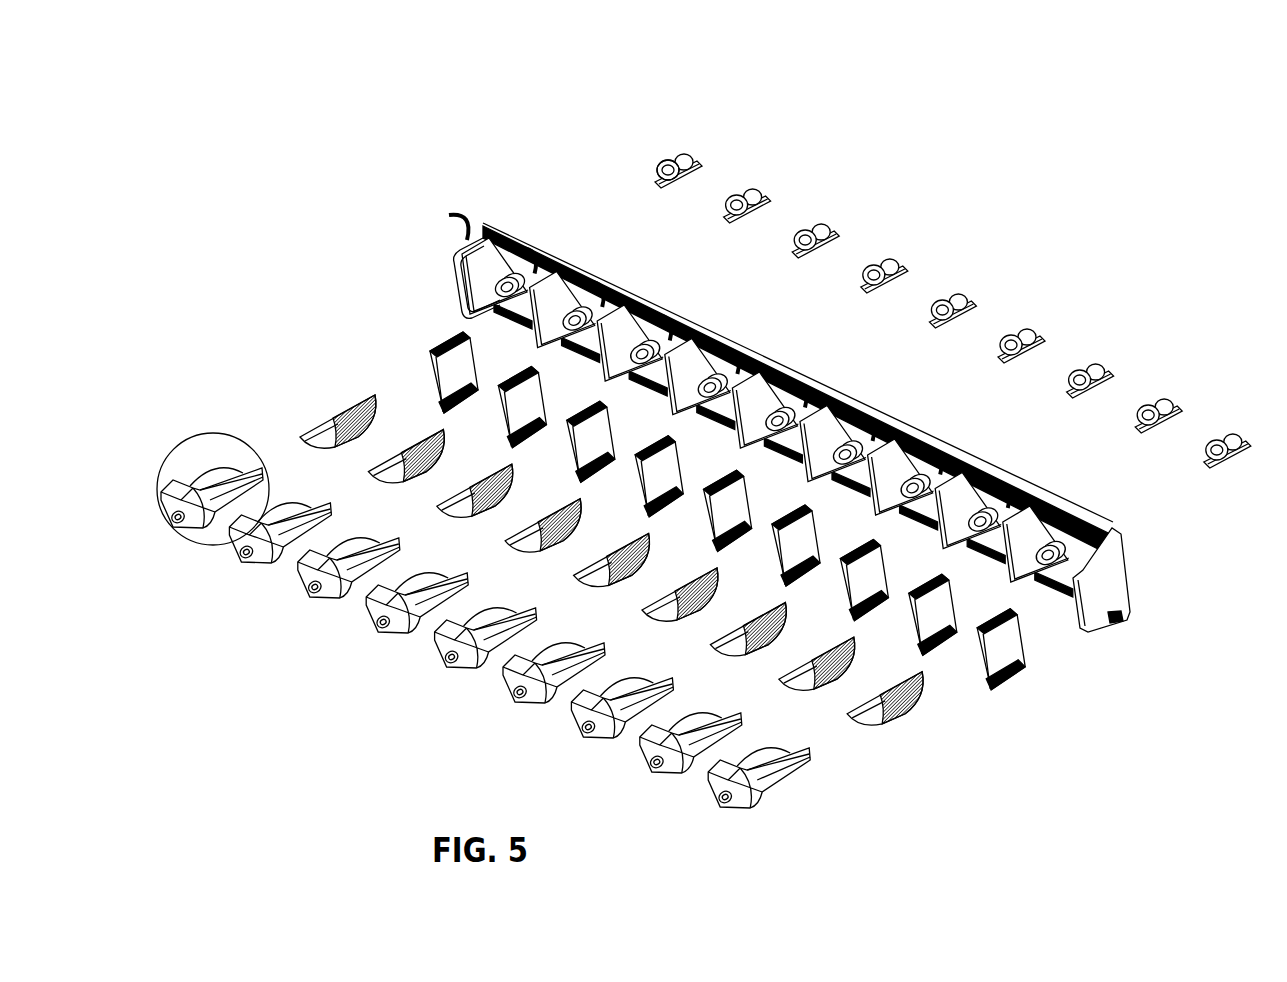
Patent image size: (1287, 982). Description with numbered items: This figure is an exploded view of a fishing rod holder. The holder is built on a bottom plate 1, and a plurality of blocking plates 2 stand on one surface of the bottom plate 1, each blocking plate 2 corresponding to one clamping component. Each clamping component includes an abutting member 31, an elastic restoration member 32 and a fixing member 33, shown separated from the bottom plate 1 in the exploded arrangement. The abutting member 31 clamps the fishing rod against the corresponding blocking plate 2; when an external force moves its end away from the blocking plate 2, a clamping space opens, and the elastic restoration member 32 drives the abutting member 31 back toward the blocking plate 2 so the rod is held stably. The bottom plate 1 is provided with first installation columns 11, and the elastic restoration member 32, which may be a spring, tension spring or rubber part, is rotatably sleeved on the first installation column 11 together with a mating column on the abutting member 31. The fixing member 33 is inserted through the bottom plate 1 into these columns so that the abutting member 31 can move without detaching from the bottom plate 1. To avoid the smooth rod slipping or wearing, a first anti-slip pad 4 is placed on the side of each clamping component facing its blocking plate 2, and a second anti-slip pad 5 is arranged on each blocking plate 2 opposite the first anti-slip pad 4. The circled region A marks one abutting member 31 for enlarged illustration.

The bottom plate 1 is at (497, 222).
The first installation column 11 is at (497, 272).
The blocking plate 2 is at (546, 250).
The first anti-slip pad 4 is at (352, 400).
The second anti-slip pad 5 is at (435, 343).
The abutting member 31 is at (178, 470).
The elastic restoration member 32 is at (668, 155).
The fixing member 33 is at (655, 172).
The detail region A is at (157, 478).